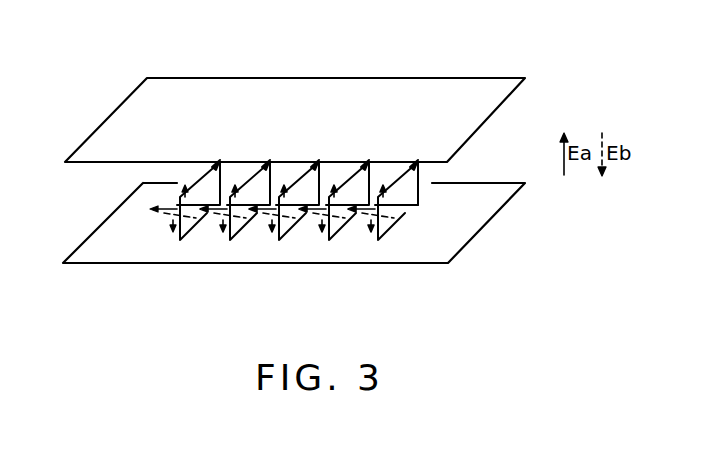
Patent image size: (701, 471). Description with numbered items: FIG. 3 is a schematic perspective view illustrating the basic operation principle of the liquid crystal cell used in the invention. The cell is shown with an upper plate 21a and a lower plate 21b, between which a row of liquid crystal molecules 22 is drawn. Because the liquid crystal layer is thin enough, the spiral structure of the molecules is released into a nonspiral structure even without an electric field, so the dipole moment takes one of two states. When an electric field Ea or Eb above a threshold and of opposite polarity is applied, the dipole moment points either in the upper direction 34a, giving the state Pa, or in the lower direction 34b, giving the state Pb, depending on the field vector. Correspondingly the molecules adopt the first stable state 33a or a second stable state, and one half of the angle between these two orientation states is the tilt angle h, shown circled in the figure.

The upper electrode plate 21a is at (462, 92).
The lower electrode plate 21b is at (468, 233).
The deflection electrode strip 22 is at (415, 178).
The first stable state 33a is at (200, 200).
The upper direction 34a is at (183, 188).
The lower direction 34b is at (168, 216).
The tilt angle h is at (406, 224).